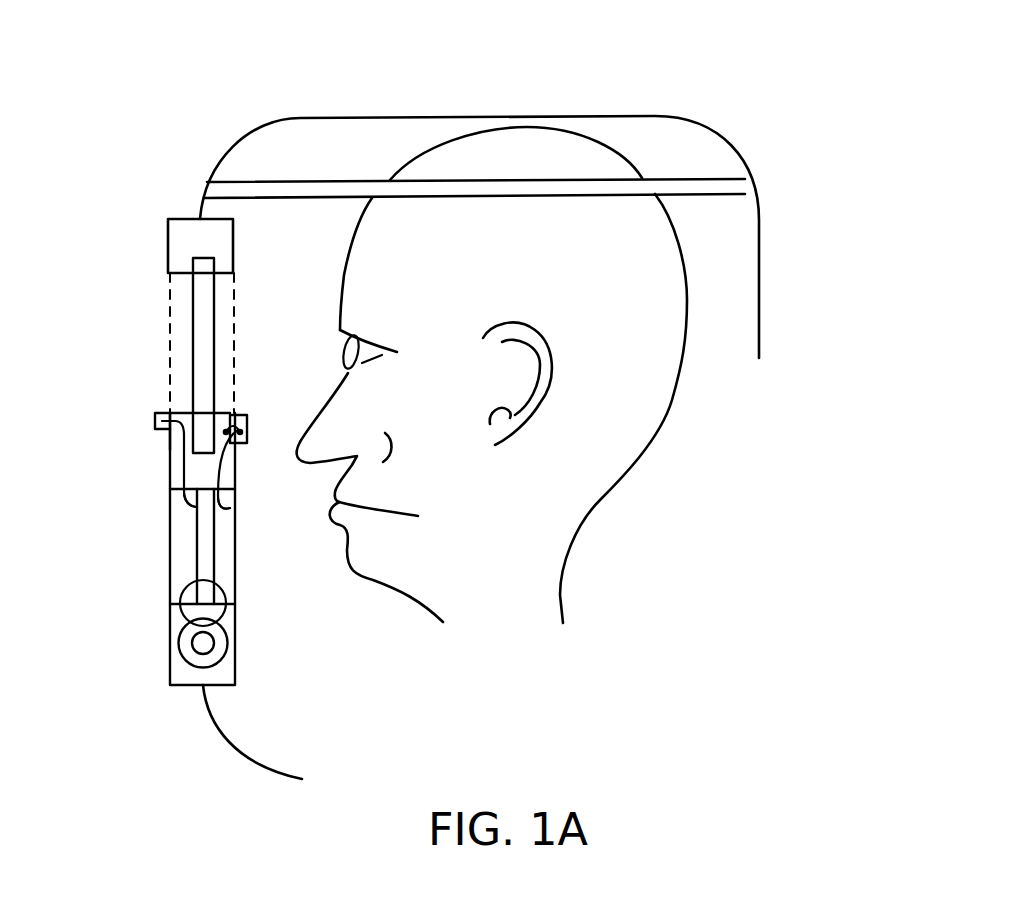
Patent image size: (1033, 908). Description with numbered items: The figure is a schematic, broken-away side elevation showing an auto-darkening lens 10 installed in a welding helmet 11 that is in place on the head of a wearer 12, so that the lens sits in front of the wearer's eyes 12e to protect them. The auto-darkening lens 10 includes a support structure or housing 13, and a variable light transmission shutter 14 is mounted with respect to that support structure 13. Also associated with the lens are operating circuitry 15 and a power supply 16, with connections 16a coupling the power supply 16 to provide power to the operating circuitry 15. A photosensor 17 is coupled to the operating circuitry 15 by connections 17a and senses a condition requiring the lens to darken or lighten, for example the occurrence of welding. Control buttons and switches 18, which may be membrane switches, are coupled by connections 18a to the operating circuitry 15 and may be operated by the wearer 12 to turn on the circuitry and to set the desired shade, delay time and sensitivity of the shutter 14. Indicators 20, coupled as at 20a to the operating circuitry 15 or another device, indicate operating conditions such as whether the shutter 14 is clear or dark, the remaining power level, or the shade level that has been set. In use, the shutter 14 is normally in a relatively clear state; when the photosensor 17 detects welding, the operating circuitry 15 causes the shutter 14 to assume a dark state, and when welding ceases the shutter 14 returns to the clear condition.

The auto-darkening lens 10 is at (398, 368).
The welding helmet 11 is at (242, 140).
The wearer 12 is at (450, 143).
The eyes 12e is at (342, 345).
The support structure 13 is at (167, 263).
The variable light transmission shutter 14 is at (200, 292).
The operating circuitry 15 is at (193, 528).
The power supply 16 is at (177, 653).
The connections 16a is at (195, 640).
The photosensor 17 is at (155, 423).
The connections 17a is at (170, 450).
The control buttons and switches 18 is at (220, 412).
The connections 18a is at (222, 478).
The indicators 20 is at (247, 432).
The coupling 20a is at (235, 510).